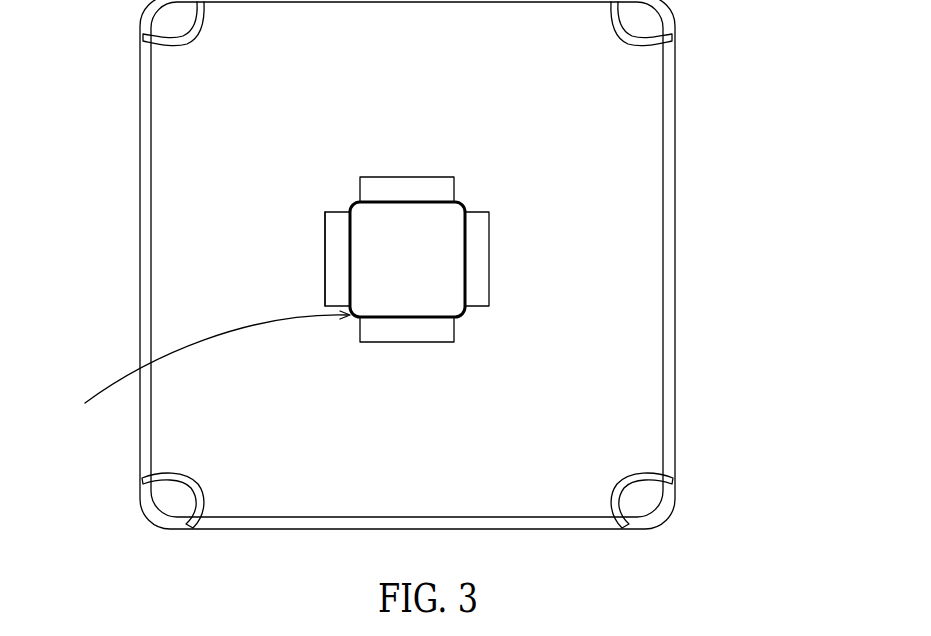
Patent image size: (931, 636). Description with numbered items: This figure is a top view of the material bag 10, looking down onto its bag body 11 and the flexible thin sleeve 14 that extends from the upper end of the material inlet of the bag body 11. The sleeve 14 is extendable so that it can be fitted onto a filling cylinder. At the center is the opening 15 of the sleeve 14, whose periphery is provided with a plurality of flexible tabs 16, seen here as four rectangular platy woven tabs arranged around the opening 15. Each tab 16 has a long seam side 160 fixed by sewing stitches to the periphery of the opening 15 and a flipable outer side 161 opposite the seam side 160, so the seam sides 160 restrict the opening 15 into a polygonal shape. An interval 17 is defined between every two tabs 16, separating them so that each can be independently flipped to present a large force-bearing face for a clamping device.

The material bag 10 is at (476, 264).
The bag body 11 is at (676, 177).
The sleeve 14 is at (462, 312).
The opening 15 is at (447, 291).
The tab 16 is at (330, 267).
The seam side 160 is at (350, 297).
The outer side 161 is at (323, 233).
The interval 17 is at (207, 372).